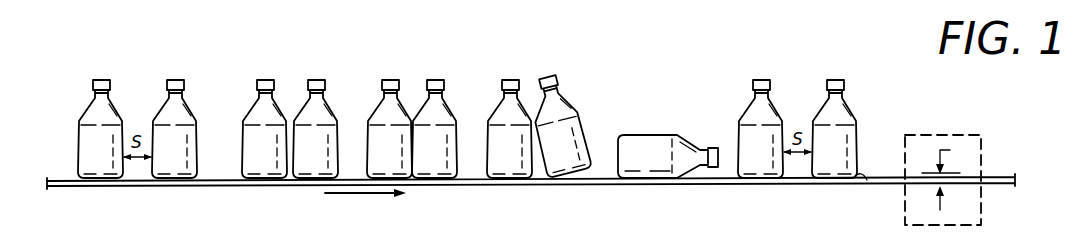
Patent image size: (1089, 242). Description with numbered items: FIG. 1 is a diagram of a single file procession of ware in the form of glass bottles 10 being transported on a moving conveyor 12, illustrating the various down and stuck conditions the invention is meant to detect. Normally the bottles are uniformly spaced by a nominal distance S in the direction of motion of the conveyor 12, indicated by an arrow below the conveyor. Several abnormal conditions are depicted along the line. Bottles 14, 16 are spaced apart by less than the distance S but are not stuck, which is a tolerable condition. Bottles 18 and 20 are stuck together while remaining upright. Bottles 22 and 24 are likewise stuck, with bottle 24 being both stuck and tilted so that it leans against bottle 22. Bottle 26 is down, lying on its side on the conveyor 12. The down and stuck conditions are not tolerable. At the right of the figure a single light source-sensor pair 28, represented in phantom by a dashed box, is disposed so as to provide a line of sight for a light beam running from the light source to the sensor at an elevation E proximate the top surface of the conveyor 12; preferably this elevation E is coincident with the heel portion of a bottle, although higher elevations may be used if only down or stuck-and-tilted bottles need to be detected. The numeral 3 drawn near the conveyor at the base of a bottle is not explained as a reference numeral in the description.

The glass bottles 10 is at (300, 56).
The moving conveyor 12 is at (227, 188).
The bottle spaced less than distance S 14 is at (253, 116).
The bottle spaced less than distance S 16 is at (325, 115).
The bottle stuck upright 18 is at (380, 108).
The bottle stuck upright 20 is at (440, 110).
The stuck bottle 22 is at (500, 107).
The stuck and tilted bottle 24 is at (557, 108).
The down bottle 26 is at (652, 142).
The light source-sensor pair 28 is at (966, 97).
The section line for FIG. 3 is at (860, 173).